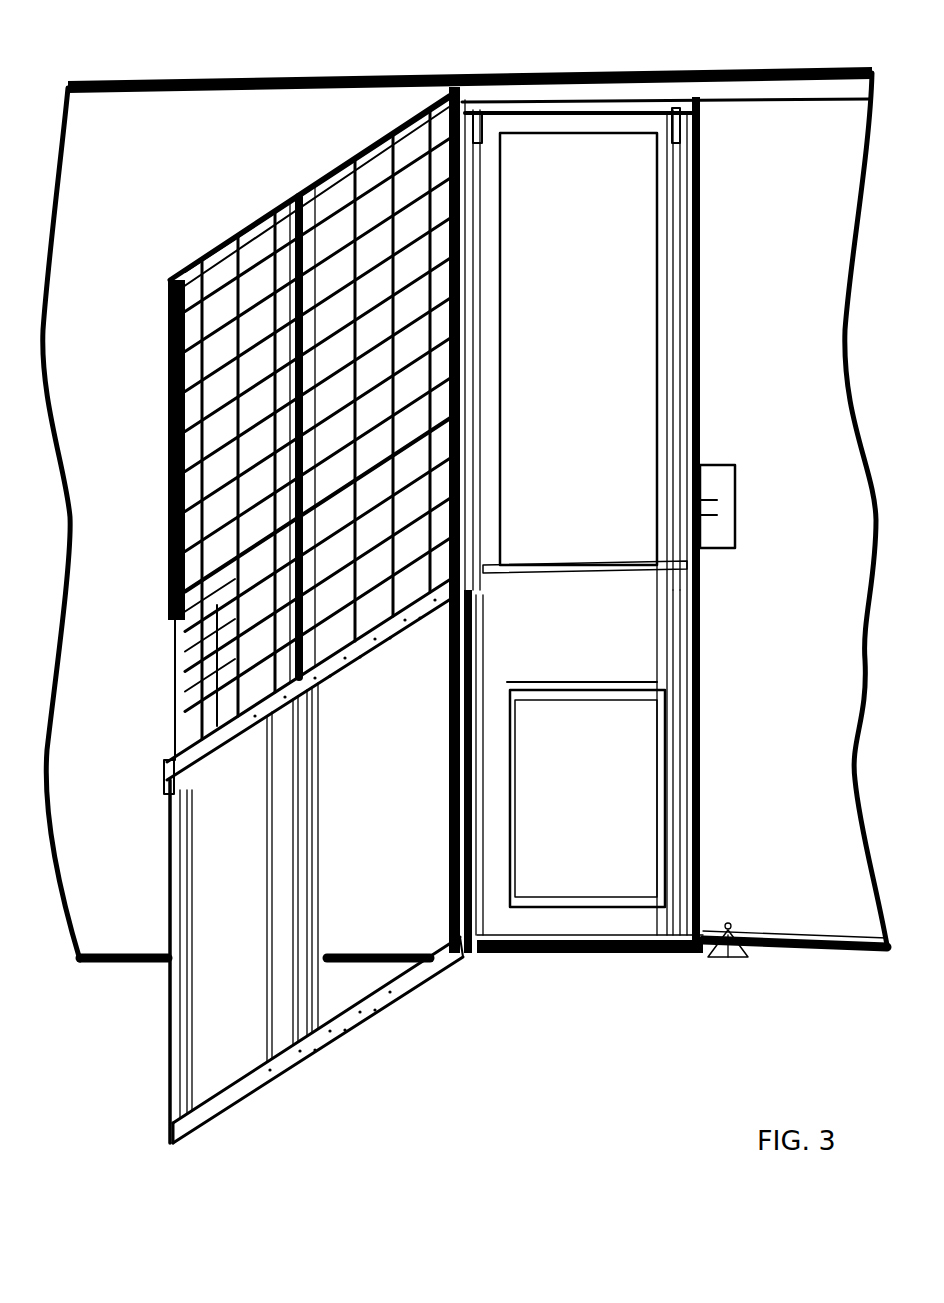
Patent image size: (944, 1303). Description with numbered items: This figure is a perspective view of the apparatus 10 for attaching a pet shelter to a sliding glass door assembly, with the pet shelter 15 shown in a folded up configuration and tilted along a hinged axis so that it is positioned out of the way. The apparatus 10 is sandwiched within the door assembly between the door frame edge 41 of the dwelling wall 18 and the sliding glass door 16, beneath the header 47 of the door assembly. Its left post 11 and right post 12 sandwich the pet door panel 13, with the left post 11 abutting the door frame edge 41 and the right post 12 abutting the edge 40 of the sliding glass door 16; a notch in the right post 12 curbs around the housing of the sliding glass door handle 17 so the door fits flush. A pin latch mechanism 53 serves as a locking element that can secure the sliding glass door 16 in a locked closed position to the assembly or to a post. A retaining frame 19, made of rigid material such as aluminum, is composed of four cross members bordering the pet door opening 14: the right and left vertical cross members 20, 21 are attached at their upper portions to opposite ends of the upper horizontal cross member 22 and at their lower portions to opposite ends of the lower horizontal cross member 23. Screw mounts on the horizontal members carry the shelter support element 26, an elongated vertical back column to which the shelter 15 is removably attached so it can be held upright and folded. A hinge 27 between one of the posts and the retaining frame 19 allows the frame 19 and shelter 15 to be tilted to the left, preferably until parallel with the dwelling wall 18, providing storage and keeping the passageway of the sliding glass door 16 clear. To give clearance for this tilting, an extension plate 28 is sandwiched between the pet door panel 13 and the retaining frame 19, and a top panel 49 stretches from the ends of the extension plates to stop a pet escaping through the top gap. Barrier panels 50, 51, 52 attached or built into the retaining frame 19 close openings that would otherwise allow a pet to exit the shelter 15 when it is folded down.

The apparatus 10 is at (150, 812).
The left post 11 is at (477, 188).
The right post 12 is at (680, 222).
The pet door panel 13 is at (597, 322).
The pet door opening 14 is at (603, 857).
The pet shelter 15 is at (232, 213).
The sliding glass door 16 is at (853, 910).
The sliding glass door handle 17 is at (718, 483).
The dwelling wall 18 is at (148, 116).
The retaining frame 19 is at (168, 768).
The right vertical cross member 20 is at (168, 910).
The left vertical cross member 21 is at (447, 850).
The upper horizontal cross member 22 is at (224, 748).
The lower horizontal cross member 23 is at (425, 967).
The shelter support element 26 is at (290, 323).
The hinge 27 is at (483, 617).
The extension plate 28 is at (678, 610).
The edge of the sliding glass door 40 is at (698, 168).
The door frame edge 41 is at (440, 92).
The header 47 is at (563, 97).
The top panel 49 is at (528, 567).
The barrier panel 50 is at (212, 1068).
The barrier panel 51 is at (282, 1033).
The barrier panel 52 is at (320, 1010).
The pin latch mechanism 53 is at (723, 950).